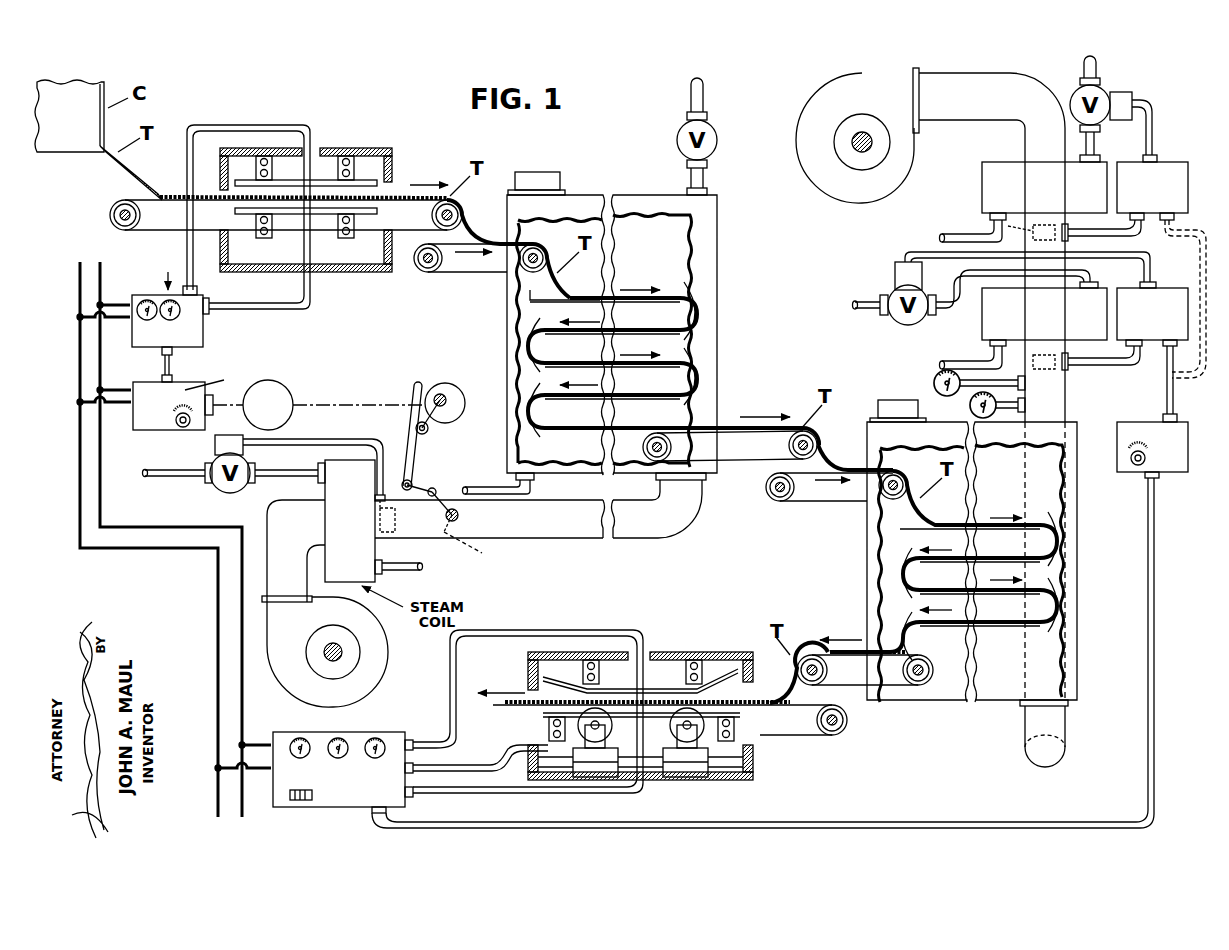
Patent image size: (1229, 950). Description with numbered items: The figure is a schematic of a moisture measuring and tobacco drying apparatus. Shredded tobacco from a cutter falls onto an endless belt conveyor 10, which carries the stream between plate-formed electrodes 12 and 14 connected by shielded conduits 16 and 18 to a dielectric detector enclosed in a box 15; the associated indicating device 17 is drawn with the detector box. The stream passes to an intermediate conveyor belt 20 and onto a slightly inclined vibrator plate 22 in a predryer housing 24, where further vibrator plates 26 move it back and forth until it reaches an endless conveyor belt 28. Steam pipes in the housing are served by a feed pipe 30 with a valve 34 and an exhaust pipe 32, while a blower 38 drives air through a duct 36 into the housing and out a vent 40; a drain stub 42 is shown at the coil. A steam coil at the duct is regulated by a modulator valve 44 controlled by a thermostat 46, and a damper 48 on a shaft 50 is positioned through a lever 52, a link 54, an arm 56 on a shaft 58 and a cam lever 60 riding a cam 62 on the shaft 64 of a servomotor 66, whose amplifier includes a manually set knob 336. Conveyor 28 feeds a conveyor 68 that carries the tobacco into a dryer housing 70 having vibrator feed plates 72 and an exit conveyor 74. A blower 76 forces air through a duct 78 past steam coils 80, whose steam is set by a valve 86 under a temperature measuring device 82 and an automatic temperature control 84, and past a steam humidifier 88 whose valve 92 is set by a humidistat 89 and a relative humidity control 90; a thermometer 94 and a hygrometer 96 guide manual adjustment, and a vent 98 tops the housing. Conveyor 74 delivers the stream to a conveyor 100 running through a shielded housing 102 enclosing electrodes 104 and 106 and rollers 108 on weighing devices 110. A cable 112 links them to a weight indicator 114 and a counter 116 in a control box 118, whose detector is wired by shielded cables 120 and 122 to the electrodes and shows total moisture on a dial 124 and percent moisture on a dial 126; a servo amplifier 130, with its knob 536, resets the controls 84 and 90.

The endless belt conveyor 10 is at (150, 232).
The plate-formed electrode 12 is at (245, 182).
The plate-formed electrode 14 is at (365, 214).
The box 15 is at (192, 335).
The shielded conduit 16 is at (240, 126).
The moisture indicating device 17 is at (140, 300).
The shielded conduit 18 is at (310, 306).
The intermediate endless conveyor belt 20 is at (450, 270).
The vibrator plate 22 is at (530, 298).
The tobacco predryer housing 24 is at (708, 226).
The vibrator plates 26 is at (540, 362).
The endless conveyor belt 28 is at (752, 459).
The feed pipe 30 is at (705, 105).
The exhaust pipe 32 is at (532, 488).
The valve 34 is at (718, 141).
The duct 36 is at (682, 505).
The blower 38 is at (362, 660).
The vent 40 is at (540, 178).
The pipe 42 is at (390, 565).
The modulator valve 44 is at (222, 483).
The thermostat 46 is at (380, 526).
The damper 48 is at (479, 551).
The shaft 50 is at (462, 514).
The lever 52 is at (440, 490).
The link 54 is at (418, 486).
The arm 56 is at (405, 455).
The shaft 58 is at (429, 431).
The cam lever 60 is at (432, 396).
The cam 62 is at (455, 410).
The shaft 64 is at (318, 402).
The servomotor 66 is at (280, 385).
The endless belt conveyor 68 is at (812, 498).
The dryer housing 70 is at (874, 558).
The vibrator feed plates 72 is at (895, 528).
The endless conveyor belt 74 is at (848, 690).
The blower 76 is at (850, 166).
The duct 78 is at (972, 90).
The steam coils 80 is at (995, 183).
The temperature measuring device 82 is at (1033, 232).
The automatic temperature control device 84 is at (1165, 162).
The valve 86 is at (1102, 98).
The steam humidifier 88 is at (995, 305).
The hygrometer or humidistat 89 is at (1045, 369).
The automatic relative humidifier control device 90 is at (1168, 290).
The steam humidifier control valve 92 is at (895, 298).
The thermometer 94 is at (938, 378).
The hygrometer 96 is at (970, 408).
The vent 98 is at (890, 408).
The endless belt conveyor 100 is at (798, 707).
The shielded housing 102 is at (685, 652).
The electrode 104 is at (560, 678).
The electrode 106 is at (545, 716).
The rollers 108 is at (608, 728).
The electronically operated weighing devices 110 is at (596, 766).
The cable 112 is at (462, 766).
The weight indicator 114 is at (296, 740).
The weight counter 116 is at (300, 802).
The control box 118 is at (358, 798).
The shielded cable 120 is at (530, 630).
The shielded cable 122 is at (480, 793).
The dial 124 is at (339, 738).
The dial 126 is at (380, 740).
The servo amplifier 130 is at (1128, 435).
The knob 336 is at (183, 428).
The knob 536 is at (1136, 466).